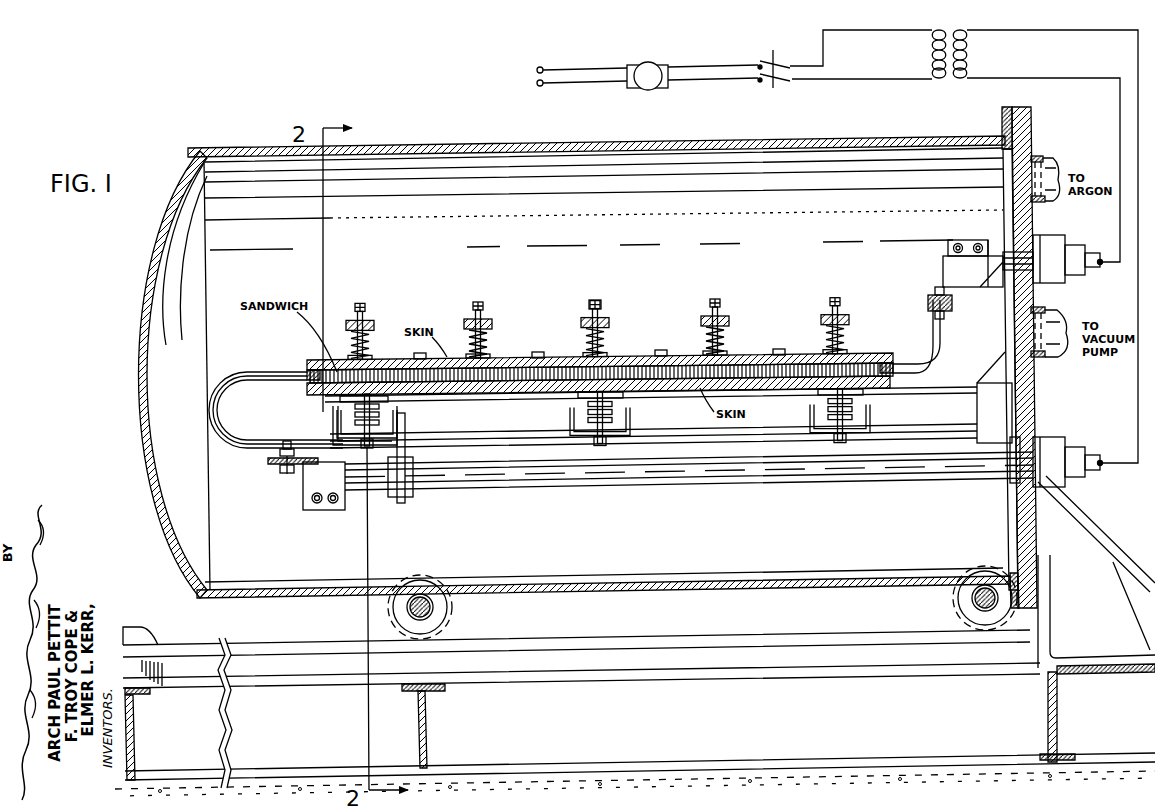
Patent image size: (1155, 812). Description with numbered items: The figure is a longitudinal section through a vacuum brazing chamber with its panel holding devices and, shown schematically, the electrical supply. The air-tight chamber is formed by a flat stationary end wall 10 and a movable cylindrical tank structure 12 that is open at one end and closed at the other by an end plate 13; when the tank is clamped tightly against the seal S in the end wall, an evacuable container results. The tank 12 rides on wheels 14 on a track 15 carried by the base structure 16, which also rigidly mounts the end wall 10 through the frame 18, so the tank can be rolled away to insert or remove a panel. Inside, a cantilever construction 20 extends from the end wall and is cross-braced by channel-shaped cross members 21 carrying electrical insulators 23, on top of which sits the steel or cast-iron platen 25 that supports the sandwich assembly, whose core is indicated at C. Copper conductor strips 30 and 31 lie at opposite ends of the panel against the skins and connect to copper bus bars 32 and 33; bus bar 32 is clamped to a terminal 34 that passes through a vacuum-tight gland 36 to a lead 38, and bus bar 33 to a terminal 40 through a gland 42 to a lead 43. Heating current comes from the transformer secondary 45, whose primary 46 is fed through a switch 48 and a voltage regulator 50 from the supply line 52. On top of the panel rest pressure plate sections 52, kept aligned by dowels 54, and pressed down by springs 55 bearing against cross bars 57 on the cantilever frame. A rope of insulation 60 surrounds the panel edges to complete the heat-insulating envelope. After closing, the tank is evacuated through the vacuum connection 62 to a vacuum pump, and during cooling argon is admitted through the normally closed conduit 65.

The end wall 10 is at (1032, 216).
The tank structure 12 is at (773, 143).
The end plate 13 is at (165, 505).
The wheels 14 is at (455, 608).
The track 15 is at (731, 643).
The base structure 16 is at (633, 692).
The frame 18 is at (1117, 556).
The cantilever construction 20 is at (941, 447).
The cross members 21 is at (333, 424).
The electrical insulators 23 is at (380, 412).
The platen 25 is at (483, 390).
The conductor strip 30 is at (930, 356).
The conductor strip 31 is at (280, 374).
The bus bar 32 is at (940, 292).
The bus bar 33 is at (278, 466).
The terminal 34 is at (1000, 252).
The vacuum-tight gland 36 is at (1060, 245).
The lead 38 is at (1120, 98).
The terminal 40 is at (582, 486).
The vacuum-tight gland 42 is at (1050, 488).
The lead 43 is at (1138, 120).
The transformer secondary 45 is at (967, 42).
The transformer primary 46 is at (938, 38).
The switch 48 is at (770, 62).
The voltage regulator 50 is at (648, 72).
The pressure plate sections 52 is at (578, 85).
The dowels 54 is at (662, 350).
The springs 55 is at (378, 337).
The cross bars 57 is at (603, 318).
The insulation rope 60 is at (900, 370).
The vacuum connection 62 is at (1045, 356).
The conduit 65 is at (1046, 158).
The core C is at (738, 366).
The seal S is at (1025, 595).